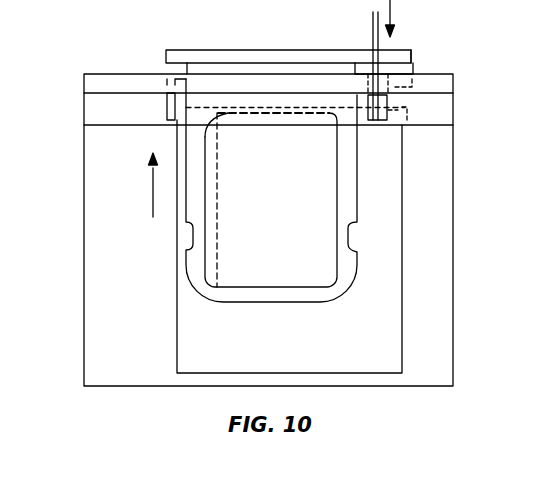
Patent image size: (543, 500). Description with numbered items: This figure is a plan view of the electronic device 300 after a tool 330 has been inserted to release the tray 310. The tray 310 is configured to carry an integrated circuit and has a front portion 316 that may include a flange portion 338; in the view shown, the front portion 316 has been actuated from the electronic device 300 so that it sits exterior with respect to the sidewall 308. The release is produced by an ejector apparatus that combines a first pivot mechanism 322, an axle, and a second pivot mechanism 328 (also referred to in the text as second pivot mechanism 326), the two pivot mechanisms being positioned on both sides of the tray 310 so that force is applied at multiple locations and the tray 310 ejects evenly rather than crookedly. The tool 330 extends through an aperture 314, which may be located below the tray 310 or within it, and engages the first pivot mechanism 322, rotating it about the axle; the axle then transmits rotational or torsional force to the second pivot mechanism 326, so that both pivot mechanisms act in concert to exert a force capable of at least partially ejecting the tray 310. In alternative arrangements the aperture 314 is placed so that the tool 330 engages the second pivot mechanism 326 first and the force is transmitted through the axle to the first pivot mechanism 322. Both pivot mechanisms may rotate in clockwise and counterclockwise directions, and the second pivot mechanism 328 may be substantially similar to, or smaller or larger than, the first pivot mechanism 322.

The electronic device 300 is at (87, 66).
The sidewall 308 is at (83, 87).
The tray 310 is at (186, 218).
The aperture 314 is at (383, 66).
The front portion 316 is at (166, 55).
The first pivot mechanism 322 is at (398, 122).
The second pivot mechanism 326 is at (331, 113).
The second pivot mechanism 328 is at (160, 118).
The tool 330 is at (373, 47).
The flange portion 338 is at (417, 54).